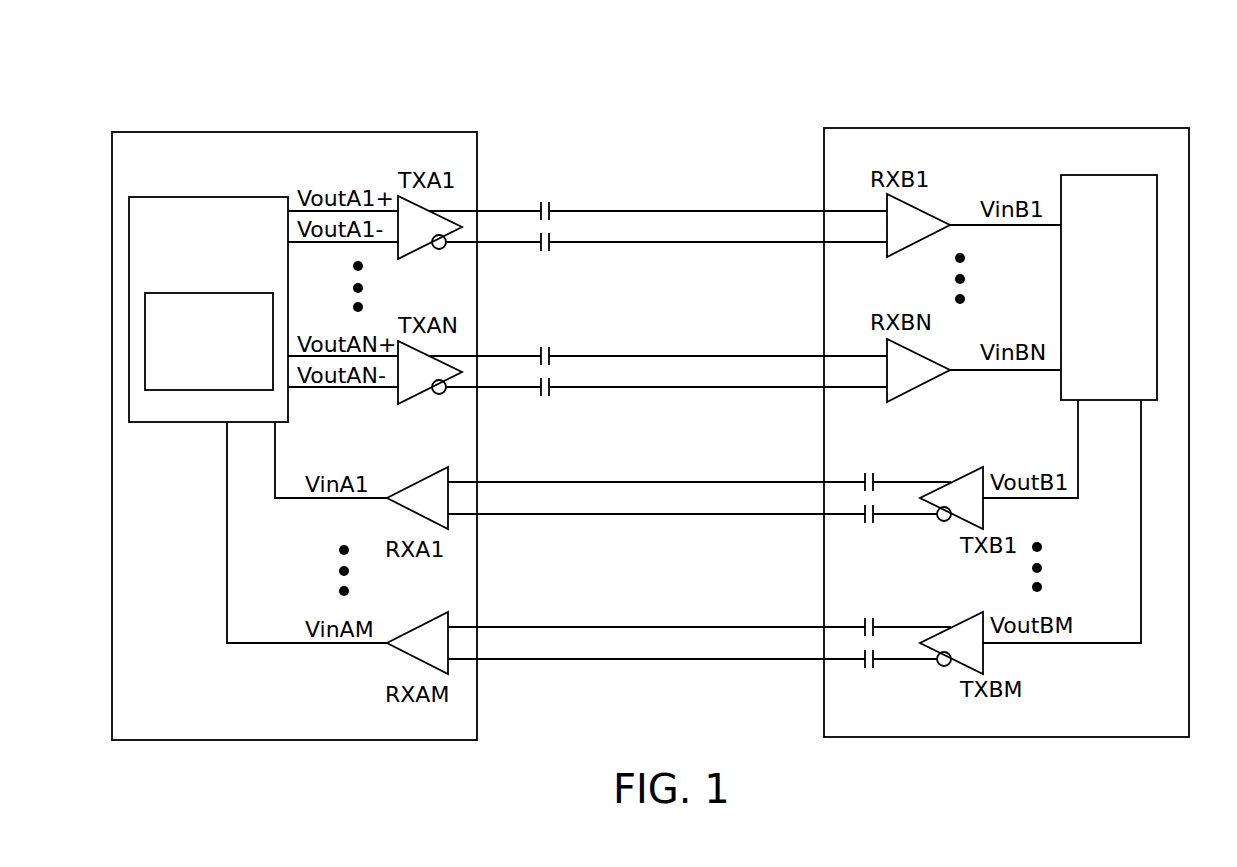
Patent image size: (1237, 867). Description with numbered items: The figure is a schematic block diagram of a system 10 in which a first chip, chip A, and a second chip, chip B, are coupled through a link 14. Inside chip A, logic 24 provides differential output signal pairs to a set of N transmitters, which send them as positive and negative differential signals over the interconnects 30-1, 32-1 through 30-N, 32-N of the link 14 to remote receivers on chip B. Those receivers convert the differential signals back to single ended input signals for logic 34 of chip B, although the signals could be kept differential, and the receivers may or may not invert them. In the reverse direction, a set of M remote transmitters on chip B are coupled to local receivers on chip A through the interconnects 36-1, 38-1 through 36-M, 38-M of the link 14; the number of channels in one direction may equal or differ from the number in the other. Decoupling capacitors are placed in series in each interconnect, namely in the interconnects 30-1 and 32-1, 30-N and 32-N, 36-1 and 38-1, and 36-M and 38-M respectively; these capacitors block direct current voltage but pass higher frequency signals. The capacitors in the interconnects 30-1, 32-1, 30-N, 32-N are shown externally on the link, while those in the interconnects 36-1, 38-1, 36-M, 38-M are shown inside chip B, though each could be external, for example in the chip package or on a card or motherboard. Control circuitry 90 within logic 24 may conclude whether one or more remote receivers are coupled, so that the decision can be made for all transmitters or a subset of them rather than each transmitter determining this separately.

The system 10 is at (302, 80).
The link 14 is at (555, 113).
The logic 24 is at (271, 242).
The control circuitry 90 is at (251, 382).
The logic 34 is at (1138, 317).
The interconnect 30-1 is at (650, 211).
The interconnect 32-1 is at (650, 242).
The interconnect 30-N is at (650, 356).
The interconnect 32-N is at (650, 387).
The interconnect 36-1 is at (607, 482).
The interconnect 38-1 is at (607, 514).
The interconnect 36-M is at (607, 627).
The interconnect 38-M is at (607, 659).